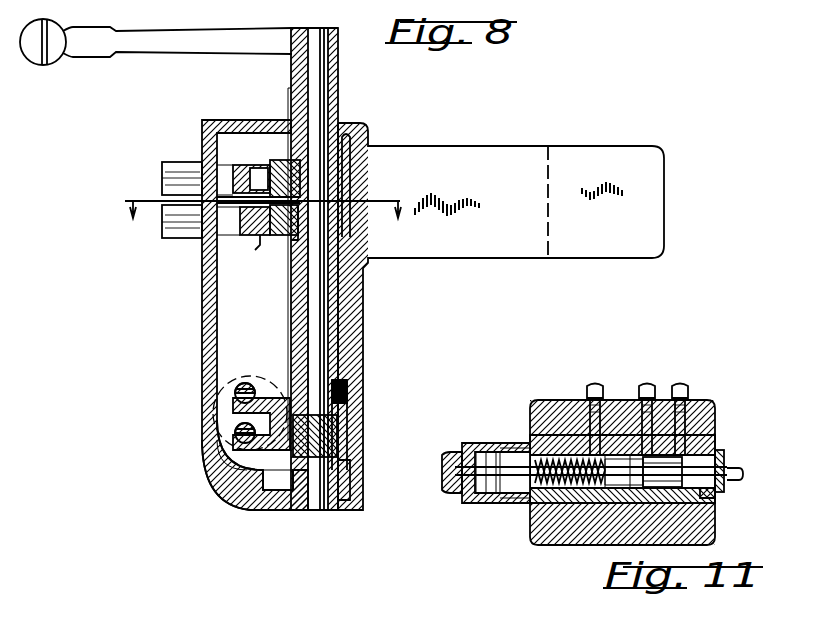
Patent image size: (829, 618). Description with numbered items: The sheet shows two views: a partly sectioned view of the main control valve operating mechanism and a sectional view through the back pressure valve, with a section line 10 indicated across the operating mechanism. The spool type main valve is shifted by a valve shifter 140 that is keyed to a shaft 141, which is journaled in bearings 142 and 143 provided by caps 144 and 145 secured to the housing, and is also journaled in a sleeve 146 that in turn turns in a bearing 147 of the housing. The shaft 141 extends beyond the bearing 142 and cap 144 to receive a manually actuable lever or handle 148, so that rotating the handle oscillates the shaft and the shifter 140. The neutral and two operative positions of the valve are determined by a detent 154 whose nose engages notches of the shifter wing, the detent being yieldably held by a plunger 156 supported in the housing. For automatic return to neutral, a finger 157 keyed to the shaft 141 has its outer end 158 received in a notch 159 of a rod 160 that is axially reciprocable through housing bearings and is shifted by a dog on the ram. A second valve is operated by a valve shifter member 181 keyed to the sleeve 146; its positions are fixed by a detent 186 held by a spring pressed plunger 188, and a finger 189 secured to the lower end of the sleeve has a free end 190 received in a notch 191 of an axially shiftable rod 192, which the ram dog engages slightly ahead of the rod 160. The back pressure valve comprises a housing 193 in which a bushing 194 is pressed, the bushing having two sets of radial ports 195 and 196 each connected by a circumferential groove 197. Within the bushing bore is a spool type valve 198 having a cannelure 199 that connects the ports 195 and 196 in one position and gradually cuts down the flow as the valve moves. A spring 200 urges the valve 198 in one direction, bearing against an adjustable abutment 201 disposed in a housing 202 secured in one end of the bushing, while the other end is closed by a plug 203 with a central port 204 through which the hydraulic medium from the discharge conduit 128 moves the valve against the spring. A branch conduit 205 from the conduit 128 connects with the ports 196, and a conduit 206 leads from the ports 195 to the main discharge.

In FIG. 8, the section line 10 is at (261, 223).
In FIG. 11, the conduit 128 is at (745, 472).
In FIG. 8, the valve shifter 140 is at (366, 172).
In FIG. 8, the shaft 141 is at (313, 353).
In FIG. 8, the bearing 142 is at (350, 146).
In FIG. 8, the bearing 143 is at (337, 477).
In FIG. 8, the cap 144 is at (345, 108).
In FIG. 8, the cap 145 is at (362, 510).
In FIG. 8, the sleeve 146 is at (355, 300).
In FIG. 8, the bearing 147 is at (293, 307).
In FIG. 8, the lever or handle 148 is at (175, 48).
In FIG. 8, the detent 154 is at (240, 167).
In FIG. 8, the plunger 156 is at (230, 158).
In FIG. 8, the finger 157 is at (340, 437).
In FIG. 8, the outer end of finger 158 is at (257, 467).
In FIG. 8, the notch 159 is at (247, 447).
In FIG. 8, the rod 160 is at (200, 447).
In FIG. 8, the valve shifter member 181 is at (287, 235).
In FIG. 8, the detent 186 is at (252, 240).
In FIG. 8, the spring pressed plunger 188 is at (227, 247).
In FIG. 8, the finger 189 is at (343, 403).
In FIG. 8, the free end of finger 190 is at (220, 415).
In FIG. 8, the notch 191 is at (250, 395).
In FIG. 8, the rod 192 is at (243, 381).
In FIG. 11, the housing 193 is at (707, 533).
In FIG. 11, the bushing 194 is at (718, 440).
In FIG. 11, the radial ports 195 is at (625, 435).
In FIG. 11, the radial ports 196 is at (716, 425).
In FIG. 11, the circumferential groove 197 is at (710, 402).
In FIG. 11, the spool type valve 198 is at (700, 508).
In FIG. 11, the cannelure 199 is at (665, 488).
In FIG. 11, the spring 200 is at (572, 503).
In FIG. 11, the adjustable abutment 201 is at (515, 503).
In FIG. 11, the housing 202 is at (516, 448).
In FIG. 11, the plug 203 is at (722, 494).
In FIG. 11, the port 204 is at (724, 460).
In FIG. 11, the branch conduit or pipe 205 is at (661, 372).
In FIG. 11, the conduit 206 is at (682, 386).